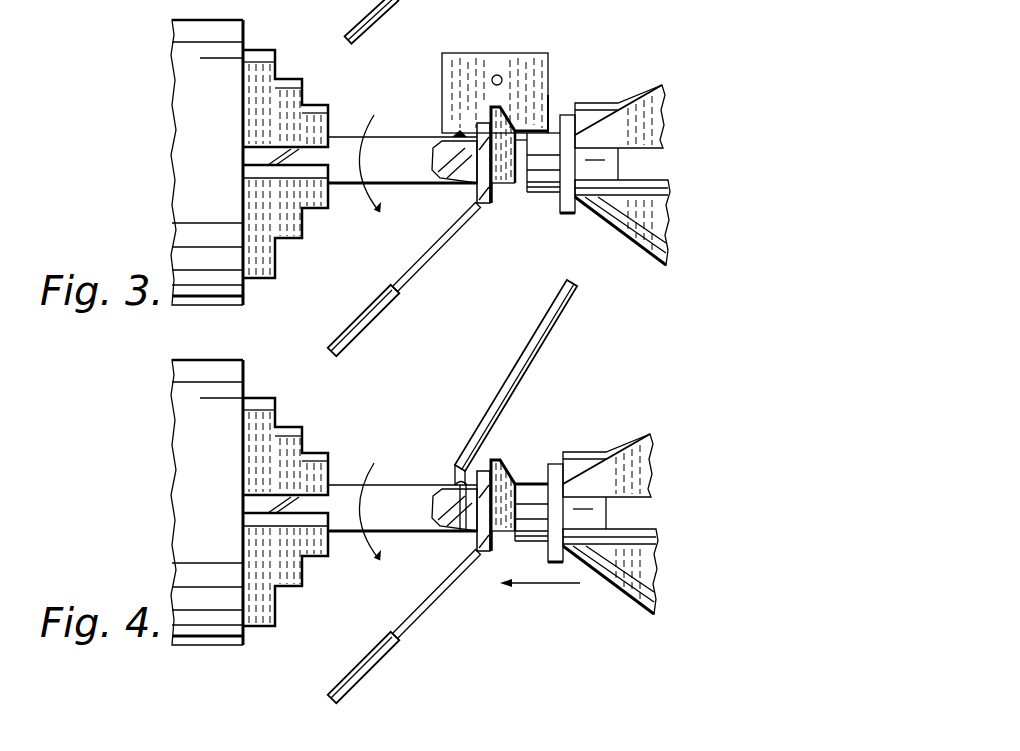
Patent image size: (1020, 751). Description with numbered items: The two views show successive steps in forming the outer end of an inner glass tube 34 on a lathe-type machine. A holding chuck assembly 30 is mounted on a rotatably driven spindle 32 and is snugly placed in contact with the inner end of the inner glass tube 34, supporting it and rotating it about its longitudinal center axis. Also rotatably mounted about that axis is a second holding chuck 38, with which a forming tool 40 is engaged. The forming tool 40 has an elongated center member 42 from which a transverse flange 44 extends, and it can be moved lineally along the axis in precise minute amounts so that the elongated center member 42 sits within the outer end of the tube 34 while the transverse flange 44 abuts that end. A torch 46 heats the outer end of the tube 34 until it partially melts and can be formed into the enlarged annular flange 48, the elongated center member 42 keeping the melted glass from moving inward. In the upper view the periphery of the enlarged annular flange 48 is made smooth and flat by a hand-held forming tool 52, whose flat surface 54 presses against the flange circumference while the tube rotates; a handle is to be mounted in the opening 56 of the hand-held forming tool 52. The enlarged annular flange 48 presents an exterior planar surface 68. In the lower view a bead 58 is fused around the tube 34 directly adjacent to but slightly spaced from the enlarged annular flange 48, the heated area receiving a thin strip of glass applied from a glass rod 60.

In FIG. 3, the holding chuck assembly 30 is at (280, 44).
In FIG. 4, the holding chuck assembly 30 is at (302, 507).
In FIG. 3, the spindle 32 is at (172, 62).
In FIG. 4, the spindle 32 is at (163, 502).
In FIG. 3, the inner glass tube 34 is at (425, 137).
In FIG. 4, the inner glass tube 34 is at (402, 495).
In FIG. 3, the second holding chuck 38 is at (678, 217).
In FIG. 4, the second holding chuck 38 is at (630, 524).
In FIG. 3, the forming tool 40 is at (520, 108).
In FIG. 4, the forming tool 40 is at (538, 483).
In FIG. 3, the elongated center member 42 is at (455, 185).
In FIG. 4, the elongated center member 42 is at (434, 525).
In FIG. 3, the transverse flange 44 is at (491, 107).
In FIG. 4, the transverse flange 44 is at (519, 474).
In FIG. 3, the torch 46 is at (370, 326).
In FIG. 4, the torch 46 is at (404, 627).
In FIG. 3, the enlarged annular flange 48 is at (492, 203).
In FIG. 4, the enlarged annular flange 48 is at (492, 545).
In FIG. 3, the hand-held forming tool 52 is at (527, 60).
In FIG. 3, the flat surface 54 is at (549, 108).
In FIG. 3, the opening 56 is at (496, 75).
In FIG. 4, the bead 58 is at (462, 533).
In FIG. 4, the glass rod 60 is at (506, 382).
In FIG. 3, the exterior planar surface 68 is at (496, 203).
In FIG. 4, the exterior planar surface 68 is at (516, 556).